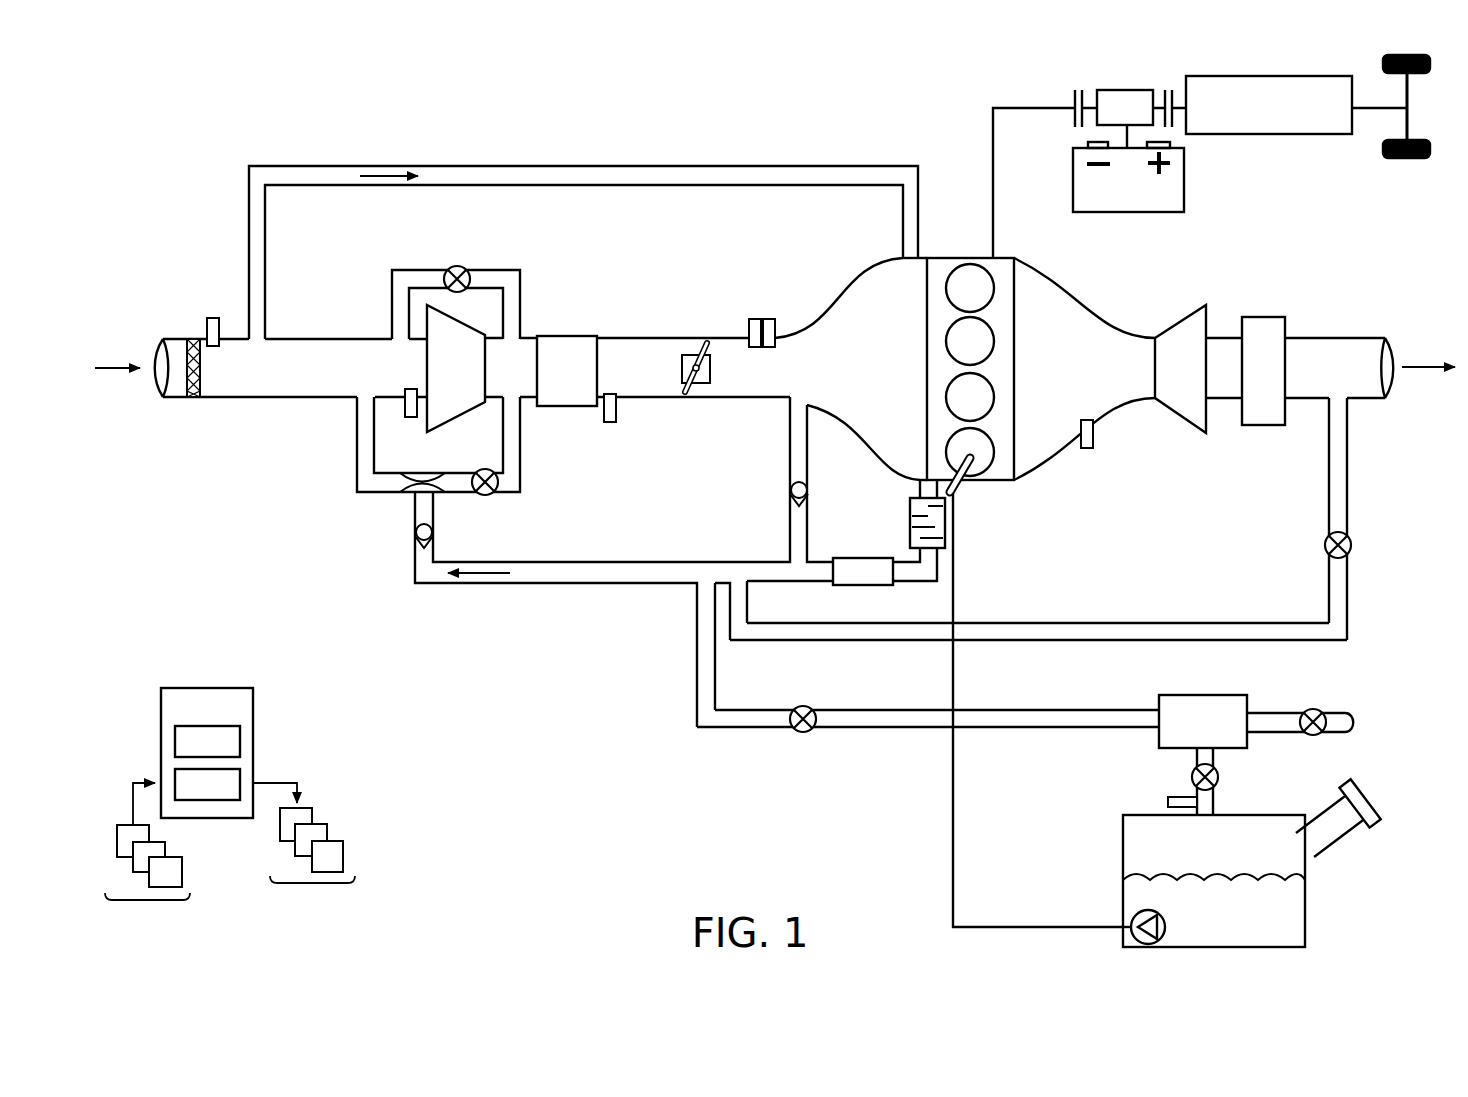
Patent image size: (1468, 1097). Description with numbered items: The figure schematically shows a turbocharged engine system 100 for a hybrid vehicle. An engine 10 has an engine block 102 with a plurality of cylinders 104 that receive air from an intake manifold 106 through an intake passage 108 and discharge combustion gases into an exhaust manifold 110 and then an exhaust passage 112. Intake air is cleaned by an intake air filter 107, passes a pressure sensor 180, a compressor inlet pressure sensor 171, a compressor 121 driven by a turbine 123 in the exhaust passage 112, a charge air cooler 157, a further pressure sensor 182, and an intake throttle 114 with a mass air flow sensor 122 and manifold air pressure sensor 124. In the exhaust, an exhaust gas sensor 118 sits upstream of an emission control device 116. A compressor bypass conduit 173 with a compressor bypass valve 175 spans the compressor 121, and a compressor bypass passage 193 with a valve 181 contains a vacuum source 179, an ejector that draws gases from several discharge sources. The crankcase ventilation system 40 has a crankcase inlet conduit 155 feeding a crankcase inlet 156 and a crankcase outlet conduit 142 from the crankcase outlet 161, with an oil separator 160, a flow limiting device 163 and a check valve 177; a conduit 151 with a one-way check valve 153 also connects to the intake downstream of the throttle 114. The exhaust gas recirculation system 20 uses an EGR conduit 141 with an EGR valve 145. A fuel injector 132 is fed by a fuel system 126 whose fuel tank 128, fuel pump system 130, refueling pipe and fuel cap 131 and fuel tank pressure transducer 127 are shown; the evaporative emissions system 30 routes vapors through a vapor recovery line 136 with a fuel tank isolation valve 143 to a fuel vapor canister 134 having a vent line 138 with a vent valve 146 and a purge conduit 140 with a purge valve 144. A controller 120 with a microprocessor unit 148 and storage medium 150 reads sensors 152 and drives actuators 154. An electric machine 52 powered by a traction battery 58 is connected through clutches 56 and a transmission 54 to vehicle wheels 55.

The engine 10 is at (1343, 262).
The exhaust gas recirculation system 20 is at (1366, 500).
The evaporative emissions system 30 is at (1055, 757).
The crankcase ventilation system 40 is at (448, 144).
The electric machine 52 is at (1133, 90).
The transmission 54 is at (1330, 134).
The vehicle wheels 55 is at (1408, 158).
The clutch 56 is at (1075, 100).
The traction battery 58 is at (1125, 212).
The engine system 100 is at (213, 216).
The engine block 102 is at (1019, 350).
The cylinders 104 is at (995, 283).
The intake manifold 106 is at (839, 320).
The intake air filter 107 is at (191, 397).
The intake passage 108 is at (262, 426).
The exhaust manifold 110 is at (1084, 369).
The exhaust passage 112 is at (1378, 338).
The intake throttle 114 is at (710, 378).
The emission control device 116 is at (1258, 318).
The exhaust gas sensor 118 is at (1092, 436).
The controller 120 is at (207, 753).
The compressor 121 is at (456, 368).
The mass air flow sensor 122 is at (755, 318).
The turbine 123 is at (1180, 369).
The manifold air pressure sensor 124 is at (770, 318).
The fuel system 126 is at (1385, 905).
The fuel tank pressure transducer 127 is at (1168, 802).
The fuel tank 128 is at (1305, 927).
The fuel pump system 130 is at (1148, 912).
The refueling pipe and fuel cap 131 is at (1360, 798).
The fuel injector 132 is at (960, 486).
The fuel vapor canister 134 is at (1203, 721).
The vapor recovery line 136 is at (1215, 757).
The vent line 138 is at (1258, 712).
The purge conduit 140 is at (1075, 705).
The EGR conduit 141 is at (1120, 620).
The crankcase outlet conduit 142 is at (762, 585).
The fuel tank isolation valve 143 is at (1192, 780).
The purge valve 144 is at (806, 705).
The EGR valve 145 is at (1324, 547).
The vent valve 146 is at (1316, 710).
The microprocessor unit 148 is at (207, 741).
The computer readable storage medium 150 is at (207, 784).
The conduit 151 is at (790, 420).
The sensors 152 is at (148, 870).
The one-way check valve 153 is at (790, 492).
The actuators 154 is at (309, 861).
The crankcase inlet conduit 155 is at (762, 166).
The inlet 156 is at (912, 250).
The charge air cooler 157 is at (541, 371).
The oil separator 160 is at (910, 528).
The outlet 161 is at (925, 470).
The flow limiting device 163 is at (860, 586).
The compressor inlet pressure sensor 171 is at (412, 418).
The compressor bypass conduit 173 is at (507, 268).
The compressor bypass valve 175 is at (452, 266).
The check valve 177 is at (415, 530).
The vacuum source 179 is at (420, 493).
The pressure sensor 180 is at (207, 328).
The valve 181 is at (489, 497).
The pressure sensor 182 is at (608, 422).
The compressor bypass passage 193 is at (357, 425).